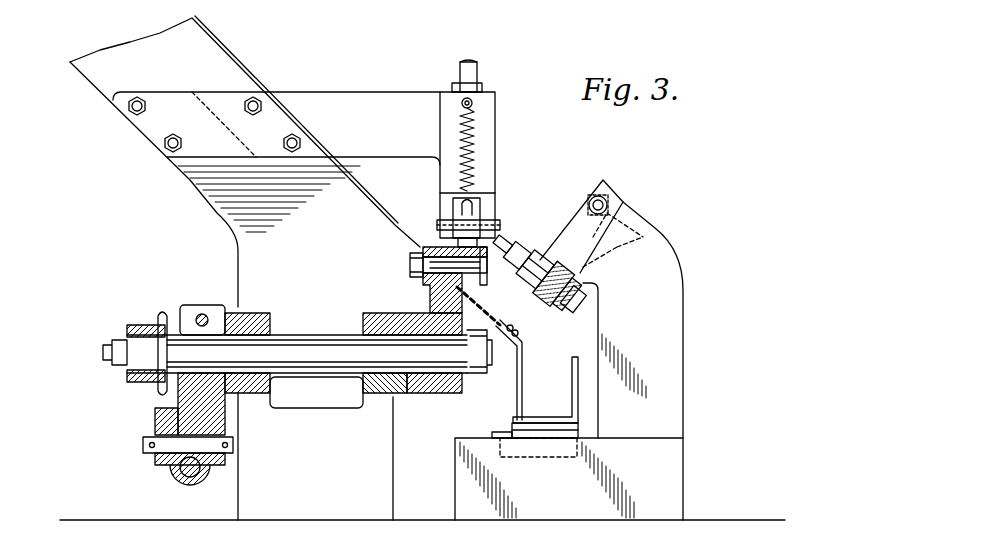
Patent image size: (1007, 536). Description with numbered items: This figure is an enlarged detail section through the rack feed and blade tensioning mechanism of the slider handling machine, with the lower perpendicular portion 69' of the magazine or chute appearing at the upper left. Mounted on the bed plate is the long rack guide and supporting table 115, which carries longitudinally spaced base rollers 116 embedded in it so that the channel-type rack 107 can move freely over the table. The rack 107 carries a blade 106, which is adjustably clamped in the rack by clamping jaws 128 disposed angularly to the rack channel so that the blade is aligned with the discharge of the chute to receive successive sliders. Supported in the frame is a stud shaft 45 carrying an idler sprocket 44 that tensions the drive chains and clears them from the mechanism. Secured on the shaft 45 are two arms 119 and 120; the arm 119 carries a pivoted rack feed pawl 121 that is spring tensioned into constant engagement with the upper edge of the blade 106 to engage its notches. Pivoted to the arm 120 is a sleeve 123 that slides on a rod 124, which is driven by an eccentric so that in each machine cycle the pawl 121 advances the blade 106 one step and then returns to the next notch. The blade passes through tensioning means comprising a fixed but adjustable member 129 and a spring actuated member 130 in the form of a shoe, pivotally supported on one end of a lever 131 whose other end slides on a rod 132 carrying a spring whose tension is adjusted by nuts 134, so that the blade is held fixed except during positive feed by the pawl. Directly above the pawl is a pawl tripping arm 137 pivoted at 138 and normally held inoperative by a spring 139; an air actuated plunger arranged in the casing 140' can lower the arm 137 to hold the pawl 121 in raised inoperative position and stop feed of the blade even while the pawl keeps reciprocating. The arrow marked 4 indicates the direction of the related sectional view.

The lower perpendicular portion of the magazine or chute 69' is at (245, 131).
The casing 140' is at (493, 149).
The spring 139 is at (470, 131).
The section view arrow 4 is at (517, 158).
The pawl tripping arm 137 is at (462, 225).
The pivot 138 is at (495, 225).
The rack feed pawl 121 is at (485, 250).
The lever 131 is at (566, 226).
The nuts 134 is at (604, 190).
The rod 132 is at (620, 202).
The spring actuated member 130 is at (500, 313).
The clamping jaws 128 is at (510, 360).
The channel-type rack 107 is at (580, 400).
The base rollers 116 is at (550, 440).
The rack guide and supporting table 115 is at (672, 456).
The blade 106 is at (490, 367).
The fixed adjustable member 129 is at (443, 330).
The arm 120 is at (215, 415).
The sleeve 123 is at (170, 480).
The rod 124 is at (190, 470).
The idler sprocket 44 is at (162, 313).
The stud shaft 45 is at (300, 335).
The arm 119 is at (428, 306).